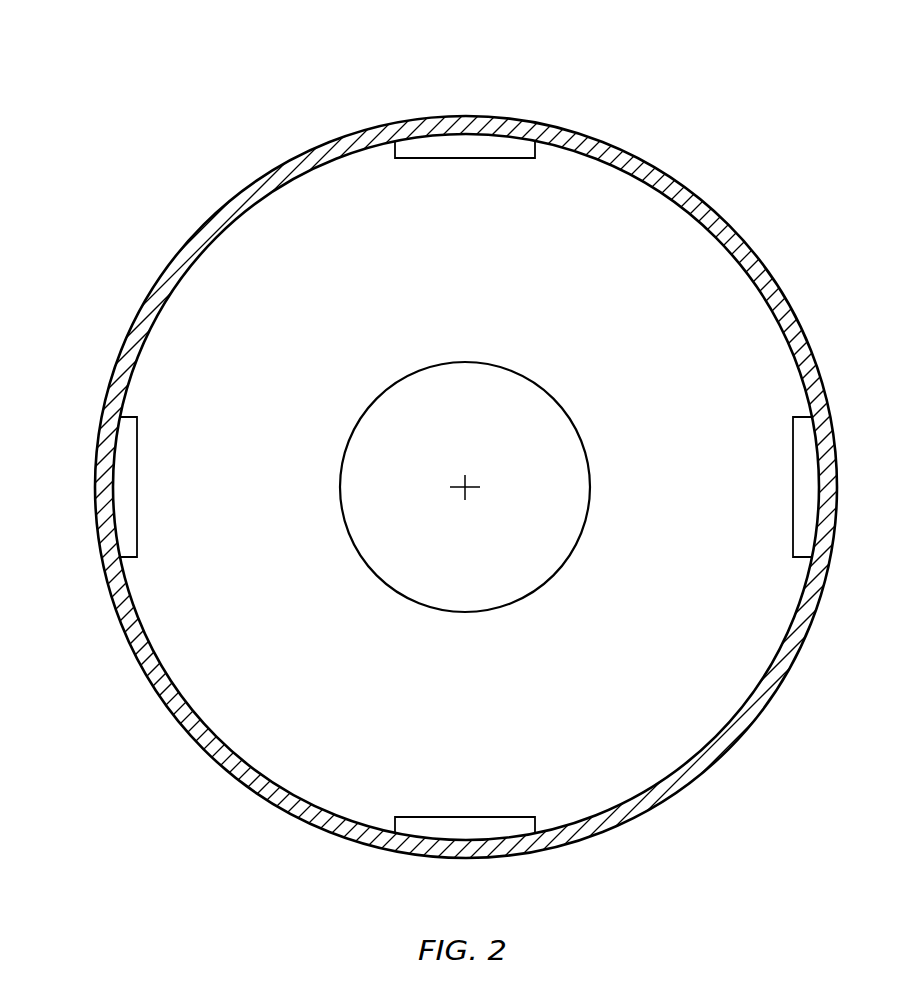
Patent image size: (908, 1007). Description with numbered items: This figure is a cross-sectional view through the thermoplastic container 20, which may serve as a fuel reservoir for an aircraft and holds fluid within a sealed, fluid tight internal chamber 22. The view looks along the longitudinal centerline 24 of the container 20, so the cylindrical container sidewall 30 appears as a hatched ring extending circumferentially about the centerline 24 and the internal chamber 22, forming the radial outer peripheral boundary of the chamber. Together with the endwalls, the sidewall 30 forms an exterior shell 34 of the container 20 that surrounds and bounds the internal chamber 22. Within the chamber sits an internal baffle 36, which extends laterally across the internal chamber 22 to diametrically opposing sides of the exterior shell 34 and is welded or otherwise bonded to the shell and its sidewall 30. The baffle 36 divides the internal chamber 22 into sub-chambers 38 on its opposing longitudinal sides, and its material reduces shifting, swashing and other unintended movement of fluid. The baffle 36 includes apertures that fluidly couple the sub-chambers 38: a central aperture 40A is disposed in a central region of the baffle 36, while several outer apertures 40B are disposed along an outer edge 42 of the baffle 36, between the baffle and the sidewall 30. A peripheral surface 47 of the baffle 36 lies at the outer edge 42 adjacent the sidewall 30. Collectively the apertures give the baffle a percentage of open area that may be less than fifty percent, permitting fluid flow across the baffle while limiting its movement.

The thermoplastic container 20 is at (794, 112).
The internal chamber 22 is at (726, 309).
The longitudinal centerline 24 is at (475, 478).
The container sidewall 30 is at (655, 168).
The exterior shell 34 is at (292, 153).
The internal baffle 36 is at (802, 350).
The sub-chambers 38 is at (331, 336).
The central aperture 40A is at (448, 552).
The outer edge apertures 40B is at (458, 148).
The outer edge 42 is at (583, 140).
The peripheral surface 47 is at (710, 215).